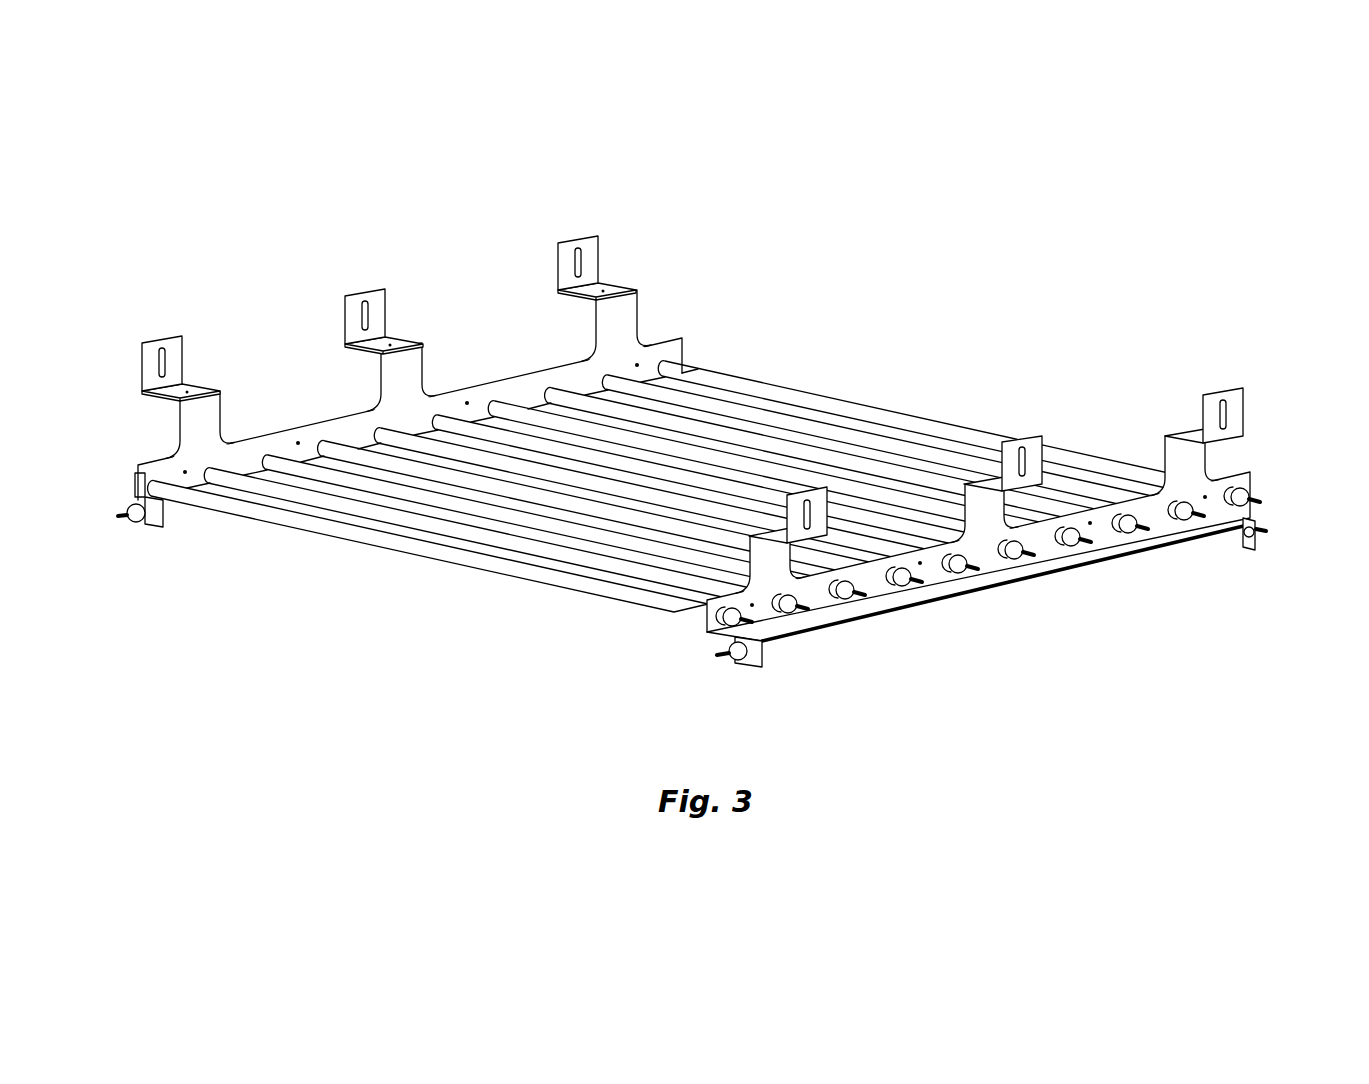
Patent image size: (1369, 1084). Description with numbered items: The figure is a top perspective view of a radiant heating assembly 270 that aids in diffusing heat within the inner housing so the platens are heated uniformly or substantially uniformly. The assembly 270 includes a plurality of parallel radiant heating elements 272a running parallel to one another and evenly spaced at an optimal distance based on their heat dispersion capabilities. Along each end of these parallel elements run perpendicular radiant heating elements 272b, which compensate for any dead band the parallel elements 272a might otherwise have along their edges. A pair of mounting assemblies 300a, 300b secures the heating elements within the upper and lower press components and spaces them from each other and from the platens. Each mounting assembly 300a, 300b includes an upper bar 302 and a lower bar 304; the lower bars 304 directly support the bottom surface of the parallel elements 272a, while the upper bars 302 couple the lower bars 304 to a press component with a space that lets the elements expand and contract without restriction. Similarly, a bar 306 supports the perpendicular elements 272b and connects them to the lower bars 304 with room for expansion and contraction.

The radiant heating assembly 270 is at (886, 287).
The parallel radiant heating elements 272a is at (633, 516).
The perpendicular radiant heating elements 272b is at (178, 507).
The mounting assembly 300a is at (1268, 460).
The mounting assembly 300b is at (112, 466).
The upper bar 302 is at (595, 253).
The lower bar 304 is at (650, 350).
The bar 306 is at (1247, 543).